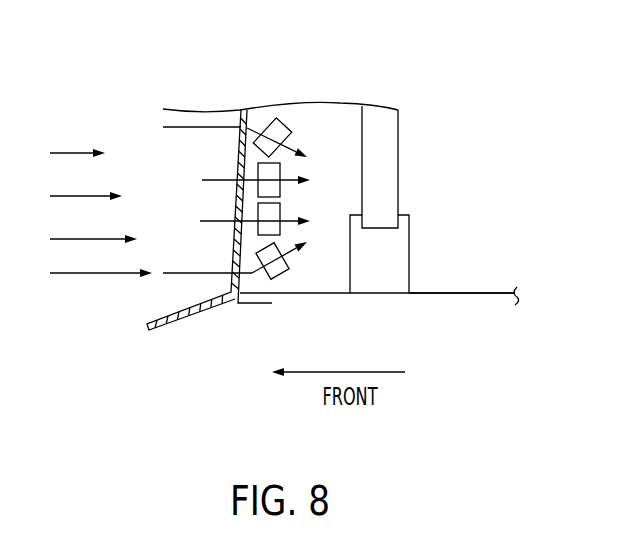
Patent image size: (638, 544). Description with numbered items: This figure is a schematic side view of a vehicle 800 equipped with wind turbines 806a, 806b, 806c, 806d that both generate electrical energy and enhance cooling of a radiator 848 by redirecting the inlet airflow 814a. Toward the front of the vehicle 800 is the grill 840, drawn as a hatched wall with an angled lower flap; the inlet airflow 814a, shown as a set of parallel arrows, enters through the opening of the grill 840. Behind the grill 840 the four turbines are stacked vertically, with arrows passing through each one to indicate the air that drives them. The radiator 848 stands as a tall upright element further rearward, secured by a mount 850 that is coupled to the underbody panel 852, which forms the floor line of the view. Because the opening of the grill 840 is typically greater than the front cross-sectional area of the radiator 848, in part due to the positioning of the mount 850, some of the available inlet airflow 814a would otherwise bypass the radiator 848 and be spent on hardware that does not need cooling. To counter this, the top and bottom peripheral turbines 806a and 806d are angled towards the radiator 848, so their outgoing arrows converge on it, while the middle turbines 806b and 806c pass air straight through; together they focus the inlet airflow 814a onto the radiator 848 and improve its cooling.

The vehicle 800 is at (116, 84).
The wind turbine 806a is at (275, 128).
The wind turbine 806b is at (268, 172).
The wind turbine 806c is at (268, 215).
The wind turbine 806d is at (275, 272).
The inlet airflow 814a is at (93, 275).
The grill 840 is at (207, 310).
The radiator 848 is at (388, 170).
The mount 850 is at (397, 262).
The underbody panel 852 is at (428, 293).